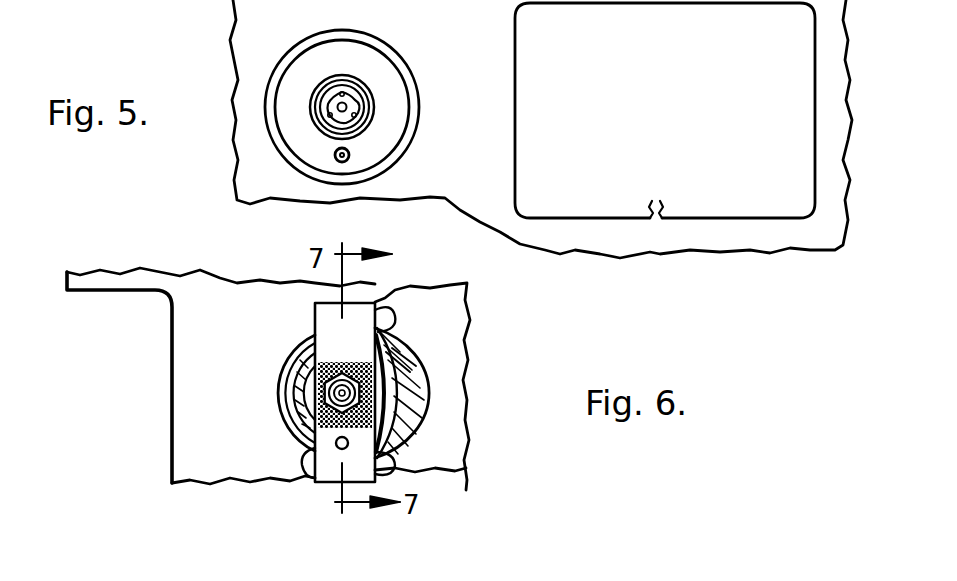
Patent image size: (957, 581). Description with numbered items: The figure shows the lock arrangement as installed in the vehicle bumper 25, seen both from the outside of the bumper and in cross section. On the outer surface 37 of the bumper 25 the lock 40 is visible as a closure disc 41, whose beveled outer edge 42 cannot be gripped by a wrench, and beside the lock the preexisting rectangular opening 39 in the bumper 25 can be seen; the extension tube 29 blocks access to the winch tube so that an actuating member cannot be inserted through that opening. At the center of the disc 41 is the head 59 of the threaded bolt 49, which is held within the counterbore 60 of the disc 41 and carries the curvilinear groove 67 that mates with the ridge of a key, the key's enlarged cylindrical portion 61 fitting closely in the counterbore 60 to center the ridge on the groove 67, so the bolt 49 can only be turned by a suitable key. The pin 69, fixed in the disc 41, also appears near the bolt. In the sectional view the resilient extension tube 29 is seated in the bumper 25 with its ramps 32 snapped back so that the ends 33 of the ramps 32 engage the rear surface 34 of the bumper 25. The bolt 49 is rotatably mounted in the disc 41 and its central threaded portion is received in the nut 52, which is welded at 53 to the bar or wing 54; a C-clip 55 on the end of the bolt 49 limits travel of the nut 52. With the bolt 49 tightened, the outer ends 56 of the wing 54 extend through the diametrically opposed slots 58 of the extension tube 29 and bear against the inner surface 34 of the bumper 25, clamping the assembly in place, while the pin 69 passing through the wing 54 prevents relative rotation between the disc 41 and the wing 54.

In FIG. 5, the bumper 25 is at (632, 250).
In FIG. 6, the bumper 25 is at (470, 335).
In FIG. 6, the extension tube 29 is at (300, 412).
In FIG. 6, the ramps 32 is at (305, 335).
In FIG. 6, the ends of ramps 33 is at (318, 300).
In FIG. 6, the rear surface of bumper 34 is at (228, 339).
In FIG. 5, the outer surface of bumper 37 is at (430, 26).
In FIG. 5, the rectangular opening 39 is at (630, 4).
In FIG. 6, the rectangular opening 39 is at (172, 372).
In FIG. 5, the lock 40 is at (318, 50).
In FIG. 5, the closure disc 41 is at (312, 130).
In FIG. 5, the outer edge of disc 42 is at (278, 72).
In FIG. 5, the threaded bolt 49 is at (372, 100).
In FIG. 6, the threaded bolt 49 is at (325, 393).
In FIG. 6, the nut 52 is at (400, 370).
In FIG. 6, the weld 53 is at (400, 415).
In FIG. 6, the wing 54 is at (380, 302).
In FIG. 6, the C-clip 55 is at (393, 393).
In FIG. 6, the outer ends of wing 56 is at (378, 308).
In FIG. 6, the slots 58 is at (385, 328).
In FIG. 5, the head of bolt 59 is at (362, 122).
In FIG. 5, the counterbore 60 is at (312, 108).
In FIG. 5, the enlarged cylindrical portion 61 is at (368, 92).
In FIG. 5, the curvilinear groove 67 is at (300, 155).
In FIG. 5, the pin 69 is at (355, 156).
In FIG. 6, the pin 69 is at (338, 452).